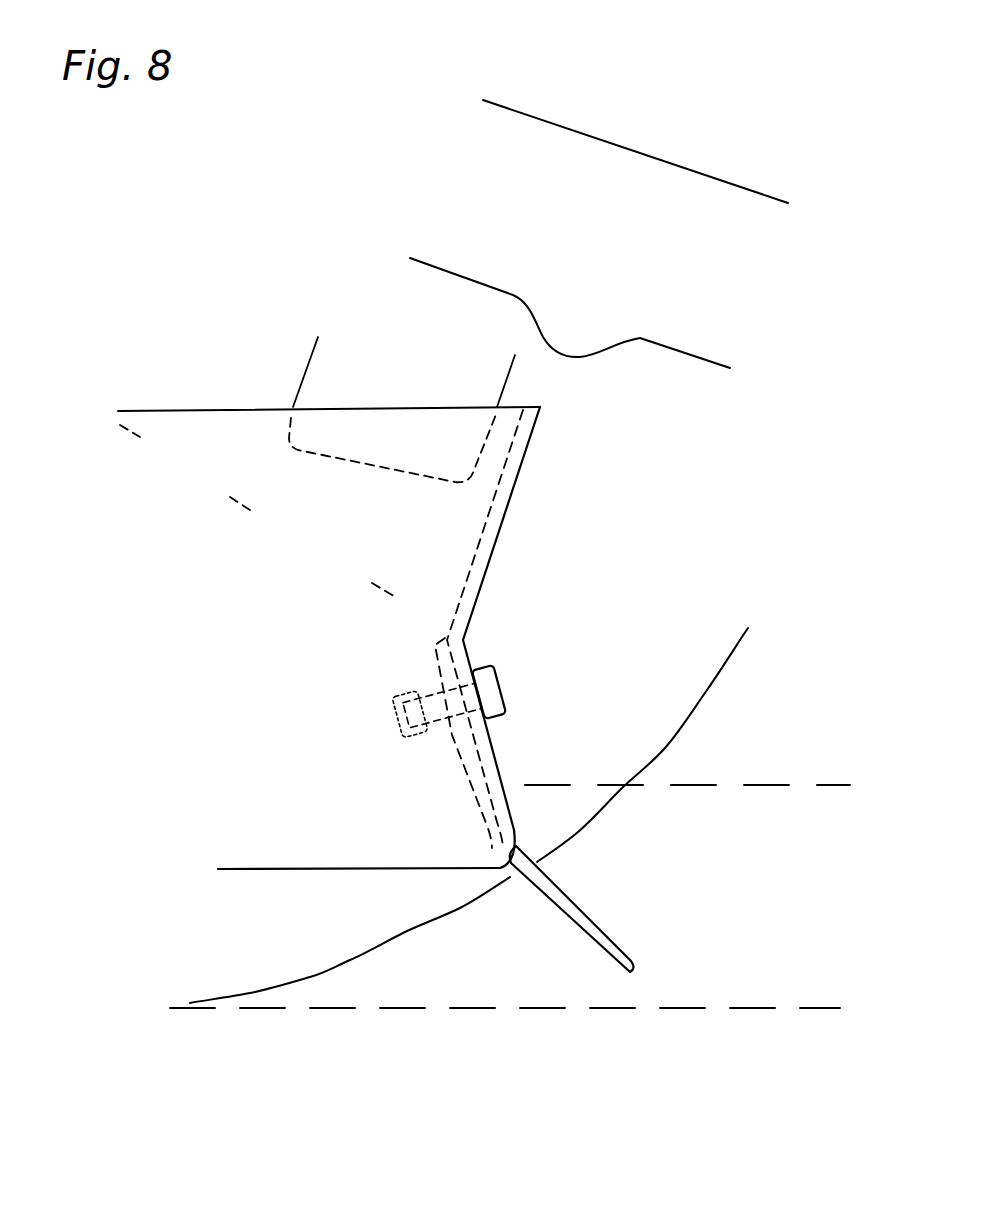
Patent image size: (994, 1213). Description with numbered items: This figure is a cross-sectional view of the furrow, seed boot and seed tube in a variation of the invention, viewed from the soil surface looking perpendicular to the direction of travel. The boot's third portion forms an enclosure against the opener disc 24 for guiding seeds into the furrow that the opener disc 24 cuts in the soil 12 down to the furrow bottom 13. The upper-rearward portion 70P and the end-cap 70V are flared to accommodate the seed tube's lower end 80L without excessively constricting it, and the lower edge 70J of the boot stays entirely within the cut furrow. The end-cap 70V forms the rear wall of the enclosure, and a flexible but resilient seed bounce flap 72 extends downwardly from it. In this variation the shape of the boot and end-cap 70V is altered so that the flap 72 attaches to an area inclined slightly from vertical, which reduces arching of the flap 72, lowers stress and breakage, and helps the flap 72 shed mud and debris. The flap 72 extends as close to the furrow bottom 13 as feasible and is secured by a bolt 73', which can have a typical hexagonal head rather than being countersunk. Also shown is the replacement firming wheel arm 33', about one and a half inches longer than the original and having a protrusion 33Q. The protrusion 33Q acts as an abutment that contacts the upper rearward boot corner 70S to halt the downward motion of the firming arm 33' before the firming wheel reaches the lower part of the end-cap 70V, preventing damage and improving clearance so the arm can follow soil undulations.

The firming wheel arm 33' is at (635, 128).
The protrusion 33Q is at (598, 361).
The seed tube lower end 80L is at (305, 367).
The upper-rearward portion 70P is at (160, 432).
The upper rearward boot corner 70S is at (543, 409).
The end-cap 70V is at (509, 527).
The lower edge 70J is at (363, 875).
The bolt 73' is at (481, 696).
The seed bounce flap 72 is at (572, 901).
The opener disc 24 is at (308, 982).
The soil 12 is at (763, 783).
The furrow bottom 13 is at (755, 1006).